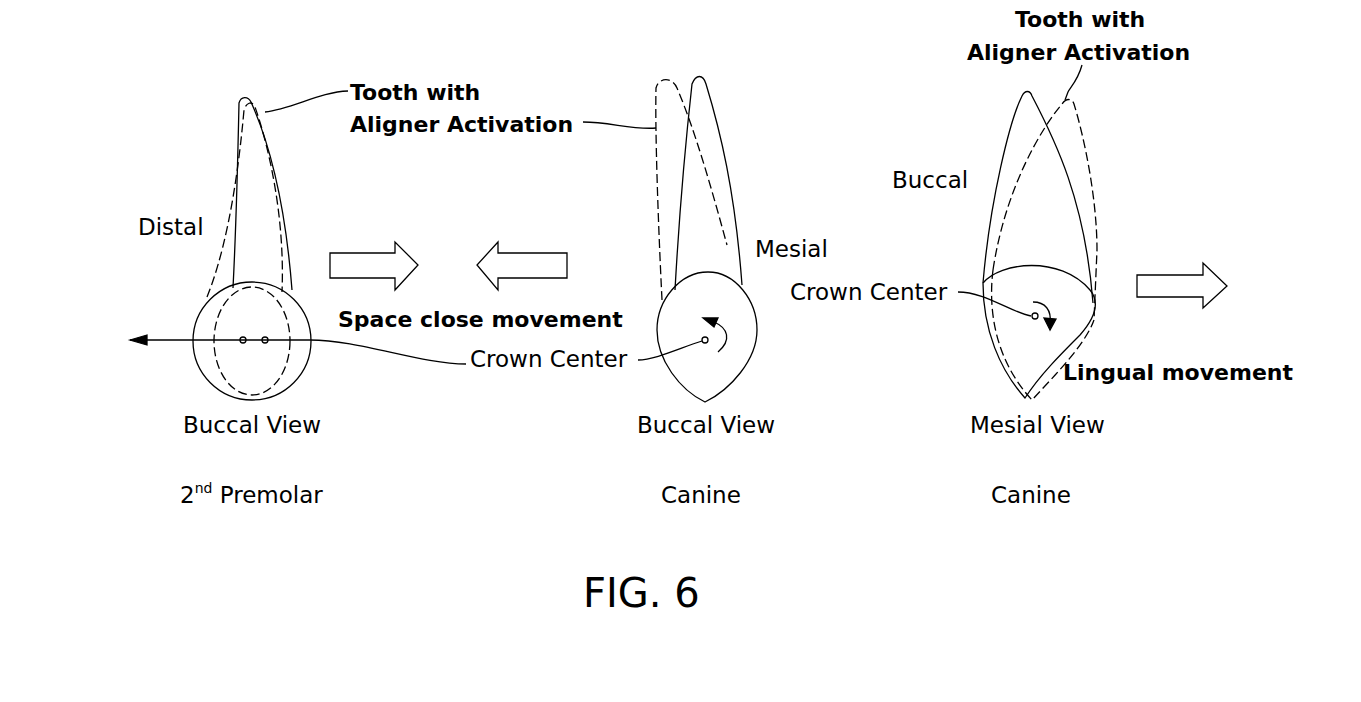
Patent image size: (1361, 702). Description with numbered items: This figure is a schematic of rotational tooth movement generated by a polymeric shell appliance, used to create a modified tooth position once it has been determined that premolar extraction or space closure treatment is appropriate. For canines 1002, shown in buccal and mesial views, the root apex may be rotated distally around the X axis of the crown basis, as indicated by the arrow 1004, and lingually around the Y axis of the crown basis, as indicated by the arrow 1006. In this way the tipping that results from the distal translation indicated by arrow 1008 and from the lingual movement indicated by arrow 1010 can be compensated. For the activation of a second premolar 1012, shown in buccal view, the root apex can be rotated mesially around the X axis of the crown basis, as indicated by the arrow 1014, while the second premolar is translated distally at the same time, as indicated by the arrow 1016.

The canine 1002 is at (1003, 127).
The arrow 1004 is at (712, 338).
The arrow 1006 is at (1045, 314).
The arrow 1008 is at (535, 254).
The arrow 1010 is at (1168, 274).
The second premolar 1012 is at (237, 149).
The arrow 1014 is at (248, 328).
The arrow 1016 is at (368, 254).